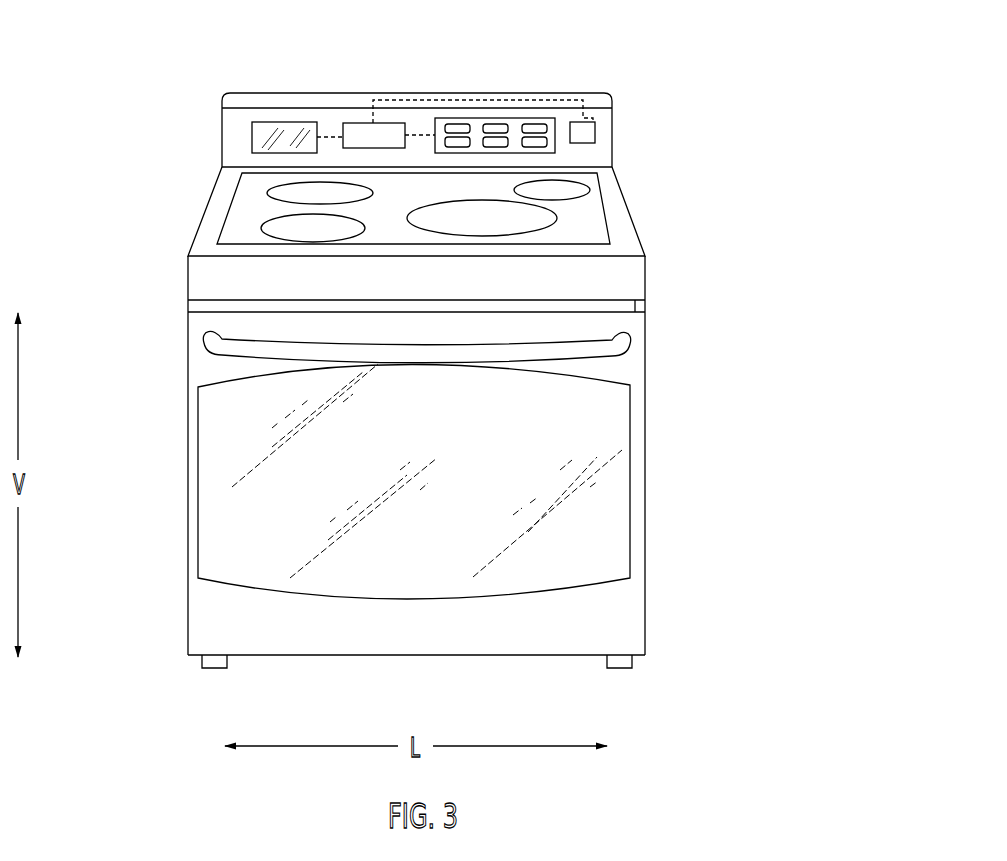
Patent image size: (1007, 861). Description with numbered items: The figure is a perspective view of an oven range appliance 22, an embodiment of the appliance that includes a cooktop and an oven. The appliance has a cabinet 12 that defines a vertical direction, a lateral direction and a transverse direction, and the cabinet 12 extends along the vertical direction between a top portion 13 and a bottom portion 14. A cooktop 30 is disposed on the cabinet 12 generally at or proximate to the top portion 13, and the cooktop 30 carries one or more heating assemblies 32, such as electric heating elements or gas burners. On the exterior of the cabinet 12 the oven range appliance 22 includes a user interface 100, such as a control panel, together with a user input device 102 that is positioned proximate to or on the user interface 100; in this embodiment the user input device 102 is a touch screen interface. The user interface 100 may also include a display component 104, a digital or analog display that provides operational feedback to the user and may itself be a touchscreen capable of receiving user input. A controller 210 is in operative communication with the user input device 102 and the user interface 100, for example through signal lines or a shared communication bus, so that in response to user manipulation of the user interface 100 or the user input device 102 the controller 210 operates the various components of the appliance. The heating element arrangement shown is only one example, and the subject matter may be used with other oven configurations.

The oven range appliance 22 is at (783, 122).
The cabinet 12 is at (193, 300).
The top portion 13 is at (657, 257).
The bottom portion 14 is at (663, 655).
The cooktop 30 is at (232, 182).
The heating assemblies 32 is at (258, 226).
The user interface 100 is at (597, 90).
The user input device 102 is at (497, 118).
The display component 104 is at (283, 122).
The controller 210 is at (350, 122).